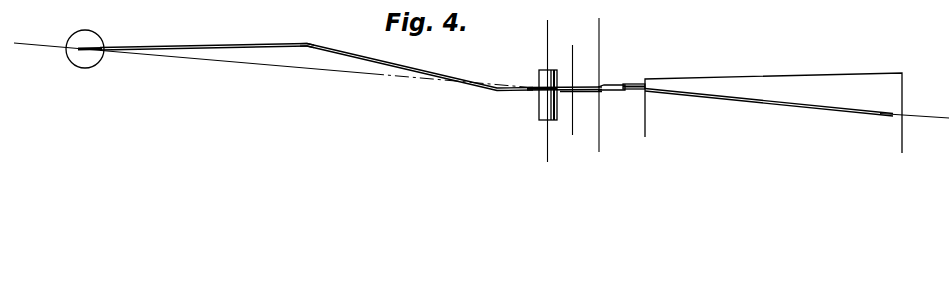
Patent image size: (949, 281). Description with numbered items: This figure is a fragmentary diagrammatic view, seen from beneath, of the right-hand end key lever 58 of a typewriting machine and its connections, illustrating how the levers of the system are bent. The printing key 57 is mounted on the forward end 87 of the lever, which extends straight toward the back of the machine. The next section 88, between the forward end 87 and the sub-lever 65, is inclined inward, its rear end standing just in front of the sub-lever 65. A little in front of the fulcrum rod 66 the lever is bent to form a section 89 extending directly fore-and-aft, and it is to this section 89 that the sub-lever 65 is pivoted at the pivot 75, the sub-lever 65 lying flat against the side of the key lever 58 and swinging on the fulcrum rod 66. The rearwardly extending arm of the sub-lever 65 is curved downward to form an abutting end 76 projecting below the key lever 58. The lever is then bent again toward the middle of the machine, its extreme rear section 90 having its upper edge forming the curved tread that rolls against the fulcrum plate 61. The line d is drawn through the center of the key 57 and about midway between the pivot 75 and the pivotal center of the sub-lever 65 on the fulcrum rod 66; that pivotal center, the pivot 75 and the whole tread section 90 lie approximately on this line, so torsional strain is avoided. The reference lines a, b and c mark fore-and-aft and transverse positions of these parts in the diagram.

The printing key 57 is at (80, 62).
The key lever 58 is at (297, 32).
The fulcrum plate 61 is at (725, 78).
The sub-lever 65 is at (580, 86).
The fulcrum rod 66 is at (538, 107).
The pivot 75 is at (603, 85).
The abutting end 76 is at (637, 83).
The forward end of the lever 87 is at (203, 48).
The inclined section of the lever 88 is at (385, 68).
The fore-and-aft section of the lever 89 is at (583, 94).
The rear tread section of the lever 90 is at (788, 105).
The reference line a is at (598, 76).
The reference line b is at (548, 81).
The reference line c is at (572, 79).
The line d is at (308, 68).